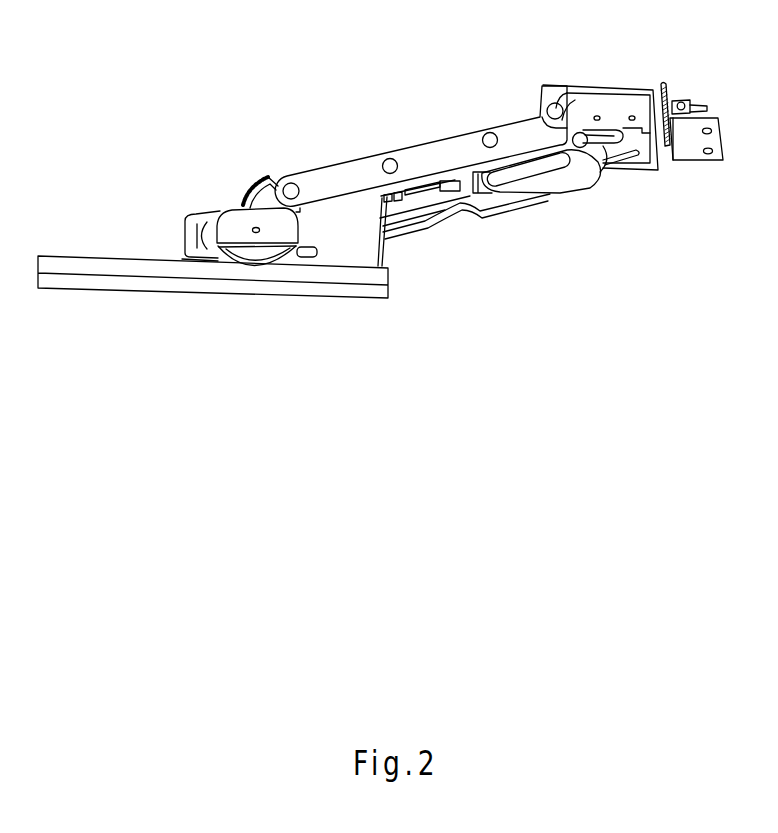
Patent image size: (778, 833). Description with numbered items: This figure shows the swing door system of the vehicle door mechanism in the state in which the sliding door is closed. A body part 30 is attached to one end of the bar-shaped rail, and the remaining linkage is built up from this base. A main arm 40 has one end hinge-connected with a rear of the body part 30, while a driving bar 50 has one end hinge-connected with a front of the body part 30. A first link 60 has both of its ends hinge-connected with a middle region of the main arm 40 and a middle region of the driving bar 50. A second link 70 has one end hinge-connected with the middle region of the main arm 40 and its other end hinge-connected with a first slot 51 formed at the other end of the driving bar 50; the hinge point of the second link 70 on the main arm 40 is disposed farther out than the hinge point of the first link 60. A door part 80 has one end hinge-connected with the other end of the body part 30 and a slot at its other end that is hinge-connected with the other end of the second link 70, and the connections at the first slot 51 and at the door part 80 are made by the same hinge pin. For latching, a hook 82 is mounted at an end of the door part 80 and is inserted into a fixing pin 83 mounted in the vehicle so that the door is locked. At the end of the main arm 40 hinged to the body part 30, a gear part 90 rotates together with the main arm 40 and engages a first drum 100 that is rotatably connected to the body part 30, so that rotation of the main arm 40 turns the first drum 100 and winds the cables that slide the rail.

The body part 30 is at (350, 250).
The main arm 40 is at (436, 148).
The driving bar 50 is at (503, 195).
The first slot 51 is at (612, 172).
The first link 60 is at (447, 190).
The second link 70 is at (544, 167).
The door part 80 is at (648, 84).
The hook 82 is at (669, 83).
The fixing pin 83 is at (694, 162).
The gear part 90 is at (266, 178).
The first drum 100 is at (254, 270).